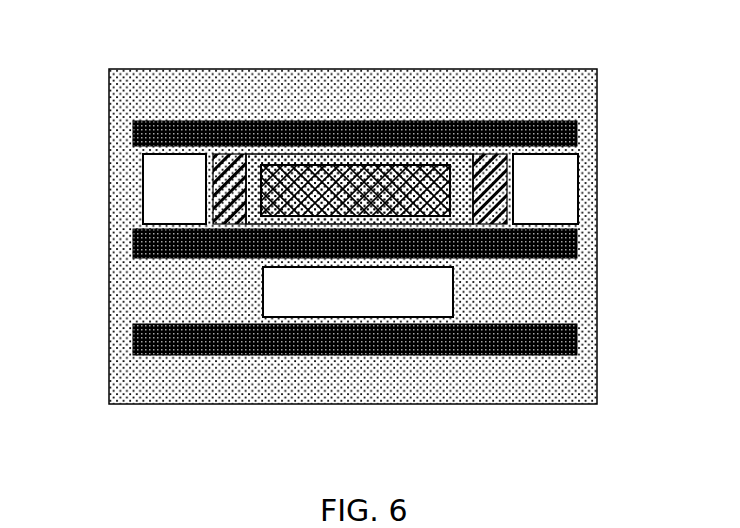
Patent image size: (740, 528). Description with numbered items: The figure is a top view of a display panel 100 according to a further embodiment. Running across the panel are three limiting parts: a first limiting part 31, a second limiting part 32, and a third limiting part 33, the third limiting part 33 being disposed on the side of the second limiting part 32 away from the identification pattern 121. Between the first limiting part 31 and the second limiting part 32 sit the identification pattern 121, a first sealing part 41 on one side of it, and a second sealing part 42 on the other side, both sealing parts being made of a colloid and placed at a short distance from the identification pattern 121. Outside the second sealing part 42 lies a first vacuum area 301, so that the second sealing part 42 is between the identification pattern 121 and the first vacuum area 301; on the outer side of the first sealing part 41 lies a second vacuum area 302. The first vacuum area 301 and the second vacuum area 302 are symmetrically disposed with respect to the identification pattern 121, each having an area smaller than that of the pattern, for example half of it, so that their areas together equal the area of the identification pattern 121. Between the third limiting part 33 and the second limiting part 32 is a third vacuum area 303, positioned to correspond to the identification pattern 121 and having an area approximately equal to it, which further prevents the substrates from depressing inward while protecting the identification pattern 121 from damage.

The display panel 100 is at (79, 18).
The first limiting part 31 is at (541, 125).
The second limiting part 32 is at (573, 231).
The third limiting part 33 is at (577, 326).
The first sealing part 41 is at (228, 160).
The second sealing part 42 is at (479, 165).
The identification pattern 121 is at (320, 187).
The first vacuum area 301 is at (545, 178).
The second vacuum area 302 is at (162, 192).
The third vacuum area 303 is at (323, 290).